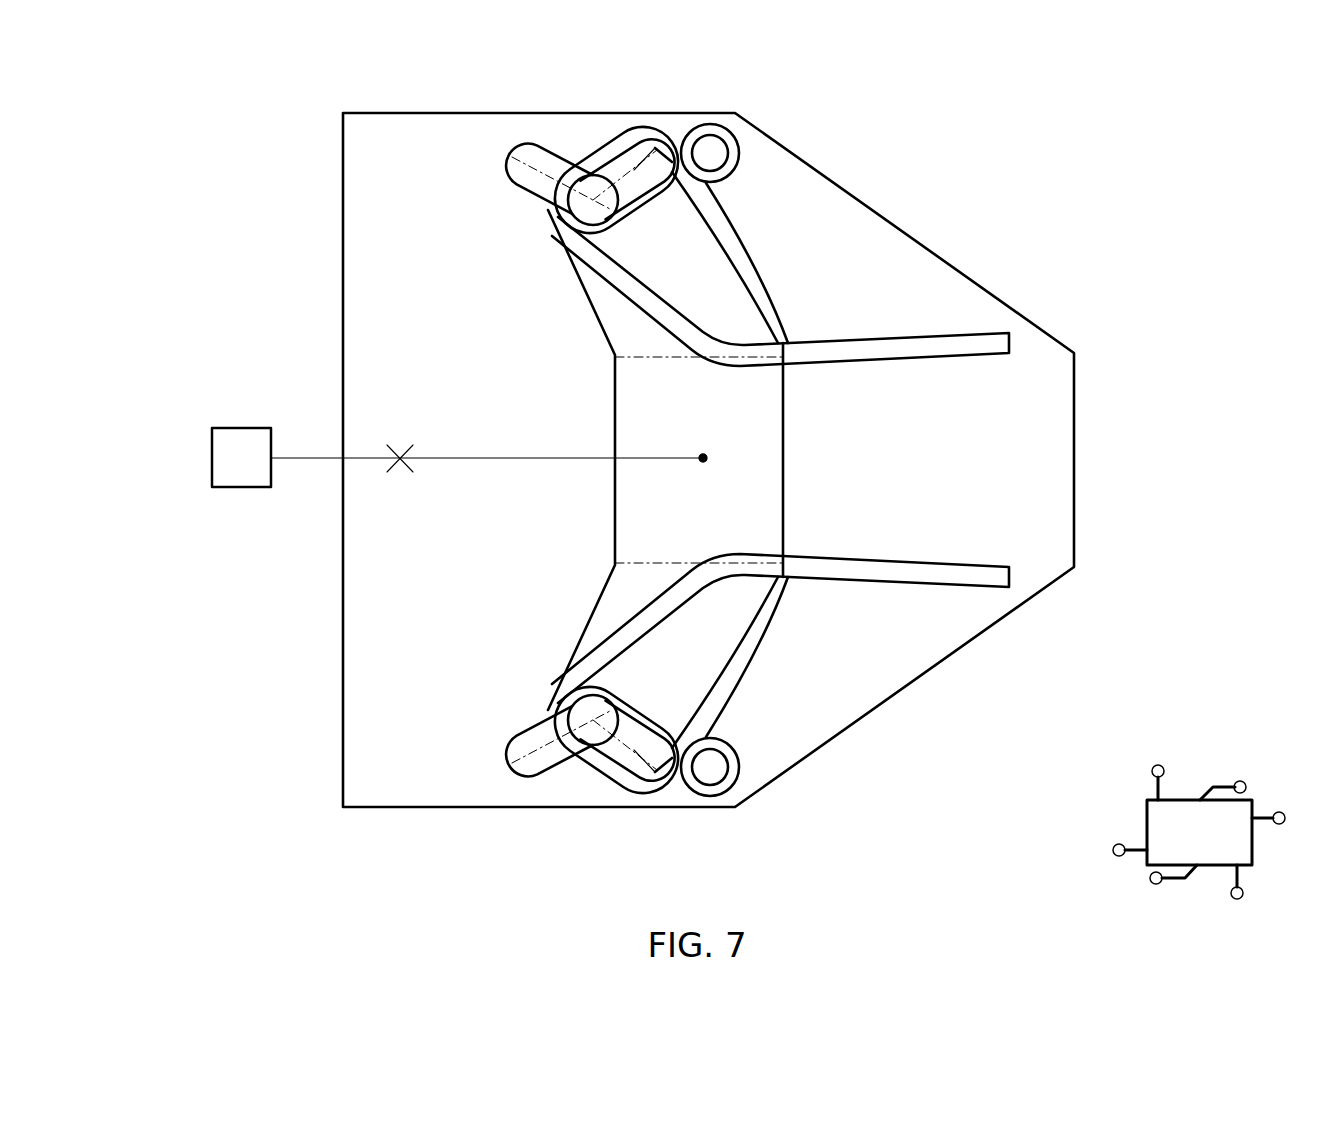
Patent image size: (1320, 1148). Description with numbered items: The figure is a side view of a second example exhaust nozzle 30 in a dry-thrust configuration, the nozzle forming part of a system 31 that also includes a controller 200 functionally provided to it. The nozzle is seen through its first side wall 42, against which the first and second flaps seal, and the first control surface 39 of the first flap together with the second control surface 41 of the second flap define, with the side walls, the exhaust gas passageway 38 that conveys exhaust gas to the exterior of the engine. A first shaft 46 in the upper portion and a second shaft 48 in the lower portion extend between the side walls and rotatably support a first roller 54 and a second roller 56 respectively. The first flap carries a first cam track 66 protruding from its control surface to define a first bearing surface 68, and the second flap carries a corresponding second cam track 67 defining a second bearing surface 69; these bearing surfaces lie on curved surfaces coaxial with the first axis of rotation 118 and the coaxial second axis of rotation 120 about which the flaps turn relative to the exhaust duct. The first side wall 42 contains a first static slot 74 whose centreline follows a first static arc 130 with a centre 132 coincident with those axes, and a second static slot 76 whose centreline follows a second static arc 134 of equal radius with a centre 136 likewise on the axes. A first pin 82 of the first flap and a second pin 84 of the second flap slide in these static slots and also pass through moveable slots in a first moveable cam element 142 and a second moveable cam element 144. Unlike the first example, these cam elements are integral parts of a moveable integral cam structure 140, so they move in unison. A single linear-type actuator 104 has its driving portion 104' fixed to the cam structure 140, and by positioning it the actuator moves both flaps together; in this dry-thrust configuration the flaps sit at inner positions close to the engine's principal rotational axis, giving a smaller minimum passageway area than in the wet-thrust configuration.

The exhaust nozzle 30 is at (1104, 109).
The system 31 is at (702, 469).
The exhaust gas passageway 38 is at (943, 466).
The first control surface 39 is at (976, 357).
The second control surface 41 is at (895, 561).
The first side wall 42 is at (384, 810).
The first shaft 46 is at (718, 154).
The second shaft 48 is at (713, 765).
The first roller 54 is at (716, 140).
The second roller 56 is at (707, 797).
The first cam track 66 is at (748, 262).
The second cam track 67 is at (778, 611).
The first bearing surface 68 is at (778, 309).
The second bearing surface 69 is at (748, 658).
The first static slot 74 is at (541, 140).
The second static slot 76 is at (533, 783).
The first pin 82 is at (587, 212).
The second pin 84 is at (587, 708).
The single actuator 104 is at (449, 422).
The driving portion 104' is at (722, 491).
The first axis of rotation 118 is at (285, 516).
The second axis of rotation 120 is at (285, 516).
The first static arc 130 is at (530, 168).
The centre of first static arc 132 is at (285, 516).
The second static arc 134 is at (540, 752).
The centre of second static arc 136 is at (387, 468).
The moveable integral cam structure 140 is at (613, 420).
The first moveable cam element 142 is at (688, 255).
The second moveable cam element 144 is at (683, 663).
The controller 200 is at (1199, 832).